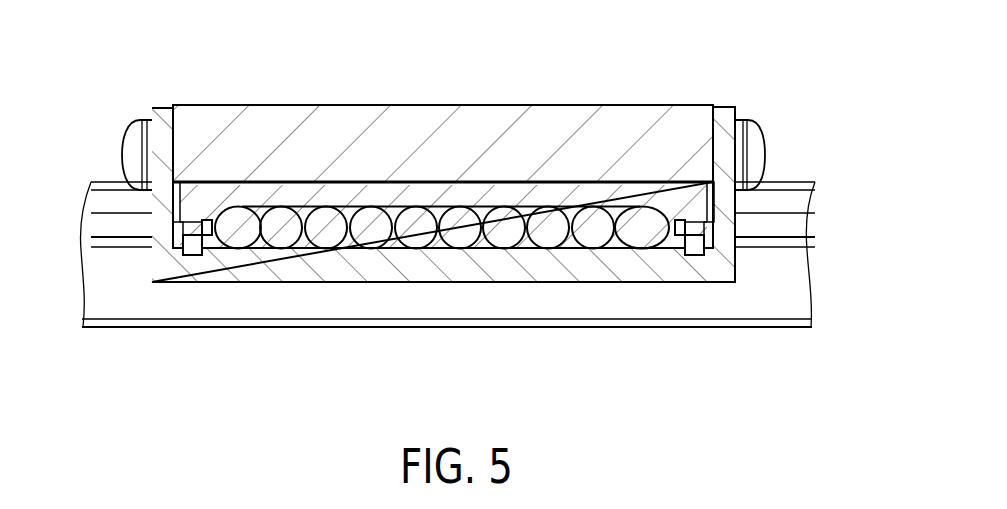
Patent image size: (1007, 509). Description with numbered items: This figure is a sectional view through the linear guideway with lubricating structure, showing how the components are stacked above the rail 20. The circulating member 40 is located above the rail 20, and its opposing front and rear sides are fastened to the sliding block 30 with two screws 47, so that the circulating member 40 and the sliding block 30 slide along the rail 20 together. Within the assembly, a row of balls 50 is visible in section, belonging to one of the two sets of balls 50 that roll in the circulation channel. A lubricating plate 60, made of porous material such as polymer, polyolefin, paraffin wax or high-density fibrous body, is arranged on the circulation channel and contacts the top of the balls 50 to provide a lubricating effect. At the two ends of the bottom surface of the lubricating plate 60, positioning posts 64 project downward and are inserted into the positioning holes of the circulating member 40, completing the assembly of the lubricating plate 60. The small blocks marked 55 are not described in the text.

The rail 20 is at (571, 343).
The sliding block 30 is at (483, 120).
The circulating member 40 is at (740, 86).
The screws 47 is at (133, 132).
The balls 50 is at (412, 228).
The retaining block 55 is at (196, 257).
The lubricating plates 60 is at (300, 192).
The positioning post 64 is at (185, 226).